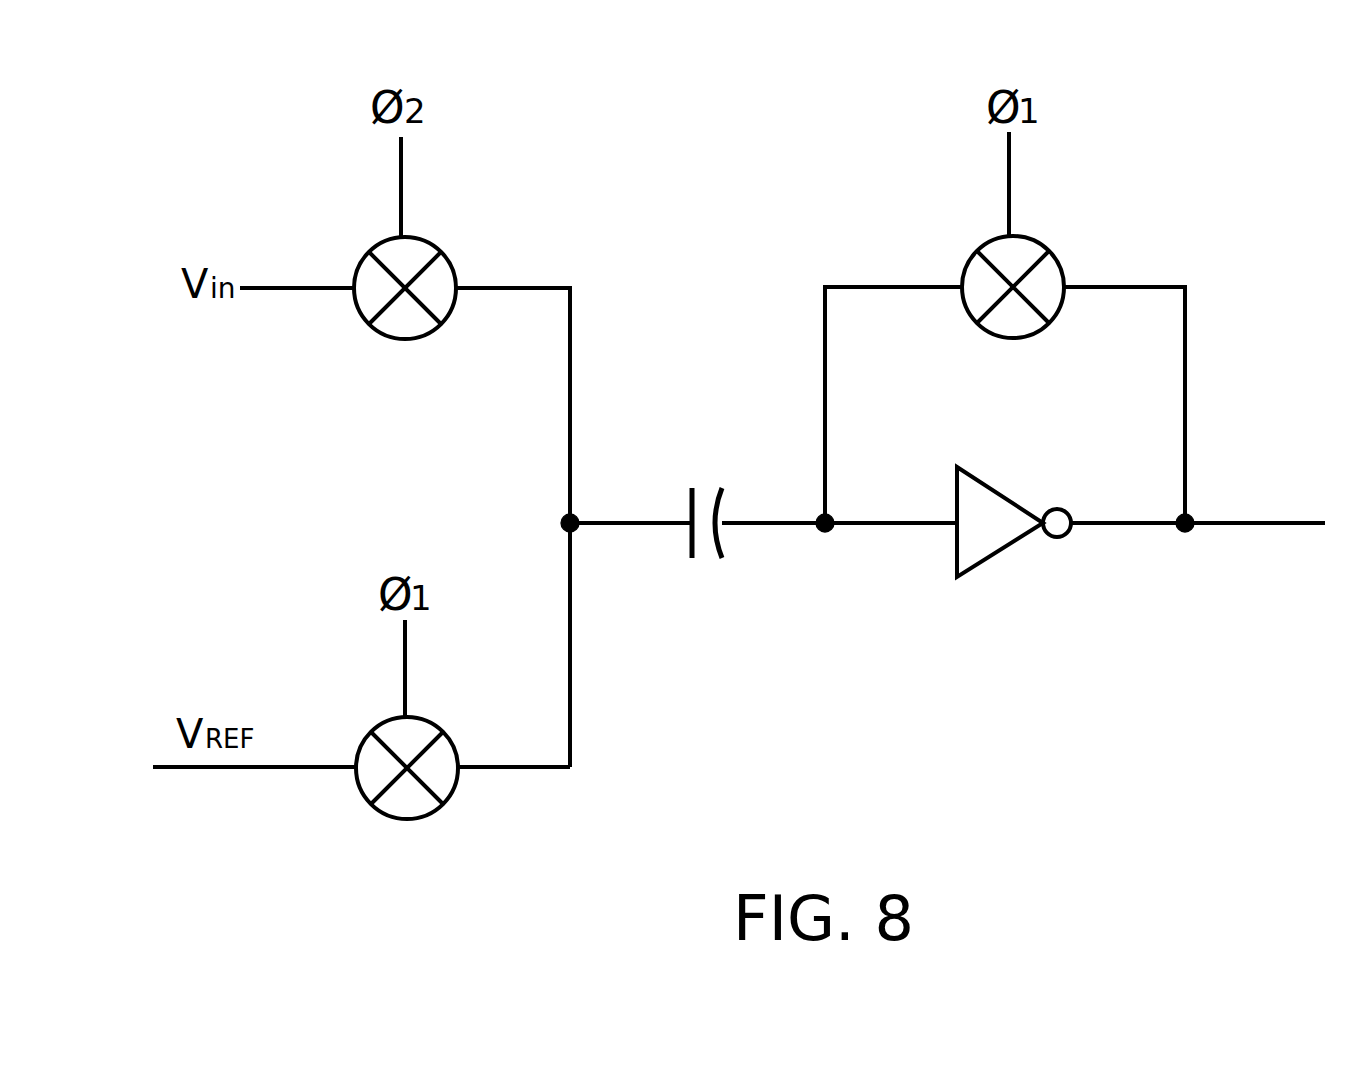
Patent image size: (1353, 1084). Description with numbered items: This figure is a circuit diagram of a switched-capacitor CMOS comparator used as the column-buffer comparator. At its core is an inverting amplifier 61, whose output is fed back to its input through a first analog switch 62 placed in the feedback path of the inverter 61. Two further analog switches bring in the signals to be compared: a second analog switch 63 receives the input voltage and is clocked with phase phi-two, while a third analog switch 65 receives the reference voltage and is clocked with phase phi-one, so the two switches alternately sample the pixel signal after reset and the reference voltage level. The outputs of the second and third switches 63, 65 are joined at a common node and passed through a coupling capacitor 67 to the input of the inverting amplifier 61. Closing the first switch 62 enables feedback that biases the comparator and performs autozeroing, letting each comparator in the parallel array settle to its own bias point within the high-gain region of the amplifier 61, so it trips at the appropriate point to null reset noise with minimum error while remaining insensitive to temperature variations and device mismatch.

The inverting amplifier 61 is at (1017, 540).
The first analog switch 62 is at (1052, 254).
The second analog switch 63 is at (397, 340).
The third analog switch 65 is at (417, 822).
The coupling capacitor 67 is at (705, 558).